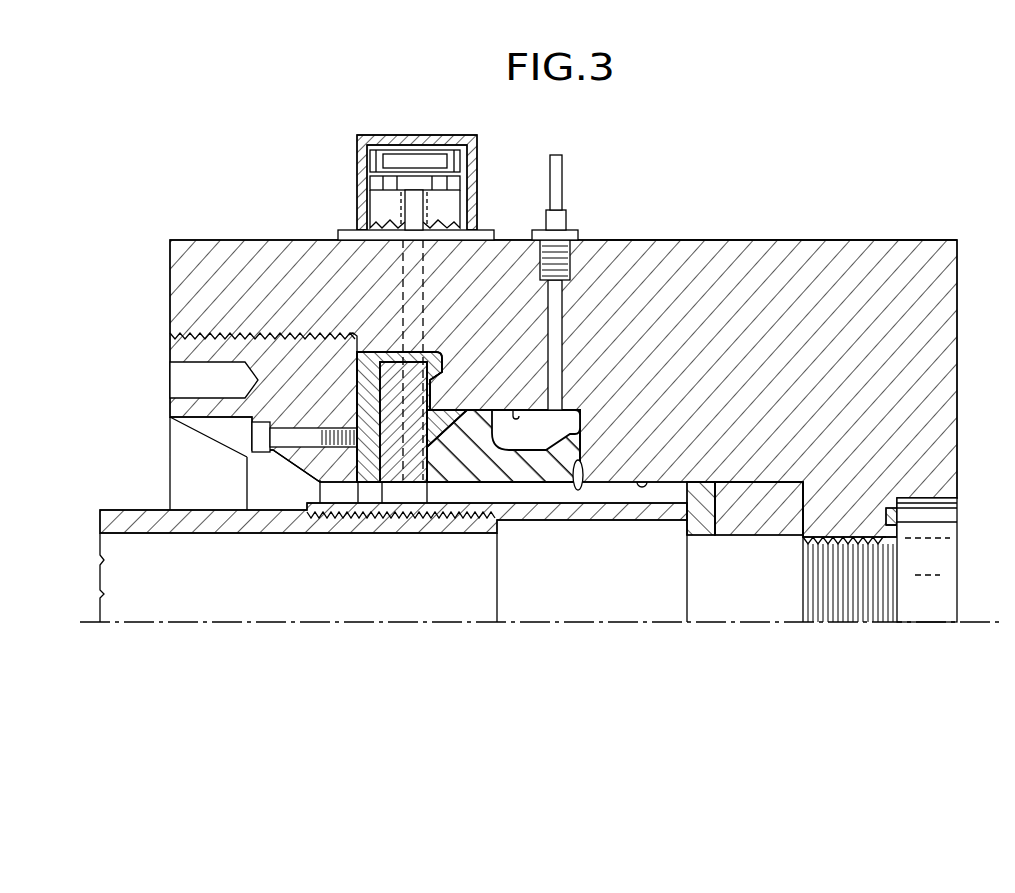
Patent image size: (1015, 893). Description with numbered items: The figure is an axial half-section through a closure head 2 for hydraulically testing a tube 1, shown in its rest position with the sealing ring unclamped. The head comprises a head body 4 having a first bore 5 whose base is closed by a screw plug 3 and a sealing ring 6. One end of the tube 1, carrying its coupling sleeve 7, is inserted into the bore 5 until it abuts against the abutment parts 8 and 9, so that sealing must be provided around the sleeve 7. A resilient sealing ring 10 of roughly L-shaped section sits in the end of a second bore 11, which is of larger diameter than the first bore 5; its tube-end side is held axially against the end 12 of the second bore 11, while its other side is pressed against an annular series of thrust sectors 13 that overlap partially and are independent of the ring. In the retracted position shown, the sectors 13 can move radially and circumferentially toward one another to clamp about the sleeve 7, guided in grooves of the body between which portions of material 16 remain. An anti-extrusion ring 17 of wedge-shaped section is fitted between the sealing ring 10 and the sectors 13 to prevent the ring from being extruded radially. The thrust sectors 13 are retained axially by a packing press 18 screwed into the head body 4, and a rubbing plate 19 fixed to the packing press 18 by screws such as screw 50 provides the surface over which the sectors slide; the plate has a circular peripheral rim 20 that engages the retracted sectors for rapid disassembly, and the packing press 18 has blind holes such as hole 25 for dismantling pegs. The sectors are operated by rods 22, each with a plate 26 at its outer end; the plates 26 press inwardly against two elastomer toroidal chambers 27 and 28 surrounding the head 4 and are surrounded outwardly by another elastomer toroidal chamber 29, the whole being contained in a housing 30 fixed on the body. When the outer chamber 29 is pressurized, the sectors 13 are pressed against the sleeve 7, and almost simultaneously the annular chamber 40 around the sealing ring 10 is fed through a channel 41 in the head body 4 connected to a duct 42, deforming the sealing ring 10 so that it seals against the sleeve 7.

The tube 1 is at (170, 520).
The closure head 2 is at (865, 240).
The screw plug 3 is at (955, 570).
The head body 4 is at (712, 275).
The first bore 5 is at (644, 482).
The sealing ring 6 is at (887, 512).
The coupling sleeve 7 is at (515, 525).
The abutment part 8 is at (700, 530).
The abutment part 9 is at (750, 520).
The resilient sealing ring 10 is at (480, 490).
The second bore 11 is at (514, 412).
The end of the second bore 12 is at (586, 472).
The thrust sectors 13 is at (395, 505).
The portions of material 16 is at (441, 380).
The anti-extrusion ring 17 is at (447, 414).
The packing press 18 is at (320, 352).
The rubbing plate 19 is at (360, 500).
The circular peripheral rim 20 is at (385, 352).
The operating rods 22 is at (405, 215).
The blind hole 25 is at (190, 380).
The plate 26 is at (462, 178).
The toroidal chamber 27 is at (385, 193).
The toroidal chamber 28 is at (450, 203).
The outer toroidal chamber 29 is at (397, 150).
The housing 30 is at (438, 140).
The annular chamber 40 is at (560, 425).
The channel 41 is at (561, 332).
The duct 42 is at (560, 185).
The screw 50 is at (300, 438).